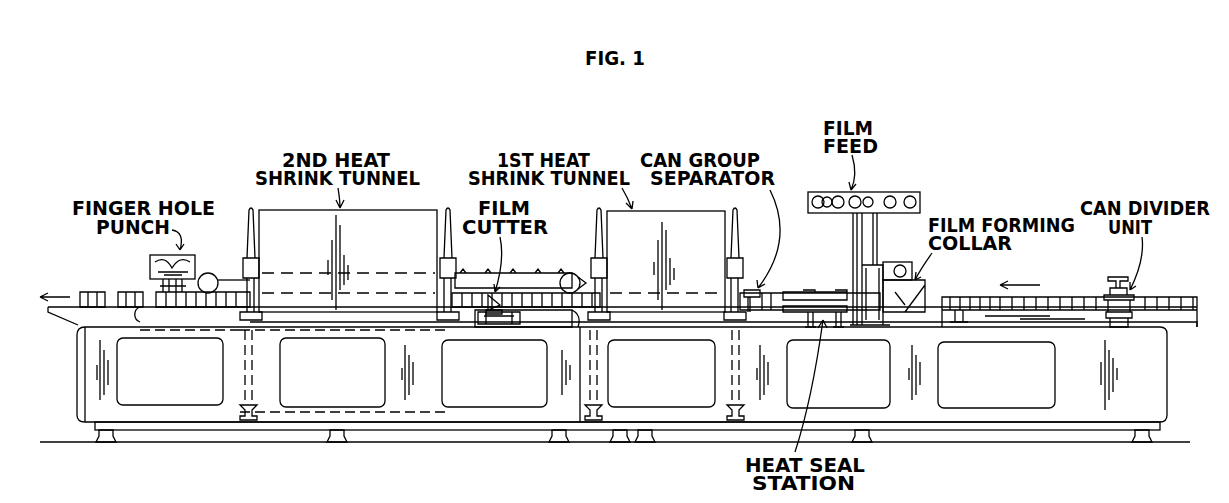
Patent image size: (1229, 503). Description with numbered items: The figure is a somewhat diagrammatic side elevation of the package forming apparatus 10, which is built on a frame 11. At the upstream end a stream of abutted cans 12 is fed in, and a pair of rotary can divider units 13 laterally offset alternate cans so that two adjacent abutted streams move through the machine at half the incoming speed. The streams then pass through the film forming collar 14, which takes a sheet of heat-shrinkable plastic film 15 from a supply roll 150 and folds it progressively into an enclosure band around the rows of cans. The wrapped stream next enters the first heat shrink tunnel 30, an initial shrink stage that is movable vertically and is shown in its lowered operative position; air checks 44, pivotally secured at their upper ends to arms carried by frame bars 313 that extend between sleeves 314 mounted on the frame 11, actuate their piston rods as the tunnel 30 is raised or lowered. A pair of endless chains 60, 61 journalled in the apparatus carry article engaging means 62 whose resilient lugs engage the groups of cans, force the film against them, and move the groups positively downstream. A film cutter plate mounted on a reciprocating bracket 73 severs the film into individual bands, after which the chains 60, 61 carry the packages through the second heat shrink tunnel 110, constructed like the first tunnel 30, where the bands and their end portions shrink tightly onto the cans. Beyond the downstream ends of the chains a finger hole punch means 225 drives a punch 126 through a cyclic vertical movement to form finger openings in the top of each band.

The package forming apparatus 10 is at (946, 188).
The frame 11 is at (1044, 425).
The cans 12 is at (1056, 297).
The rotary can divider units 13 is at (1141, 283).
The film forming collar 14 is at (937, 280).
The plastic film 15 is at (828, 210).
The first heat shrink tunnel 30 is at (613, 226).
The air checks 44 is at (597, 238).
The endless chain 60 is at (544, 273).
The endless chain 61 is at (545, 330).
The article engaging means 62 is at (492, 272).
The bracket 73 is at (495, 328).
The second heat shrink tunnel 110 is at (438, 201).
The punch 126 is at (160, 288).
The roll 150 is at (830, 196).
The finger hole punch means 225 is at (150, 256).
The frame bars 313 is at (598, 266).
The sleeves 314 is at (722, 315).